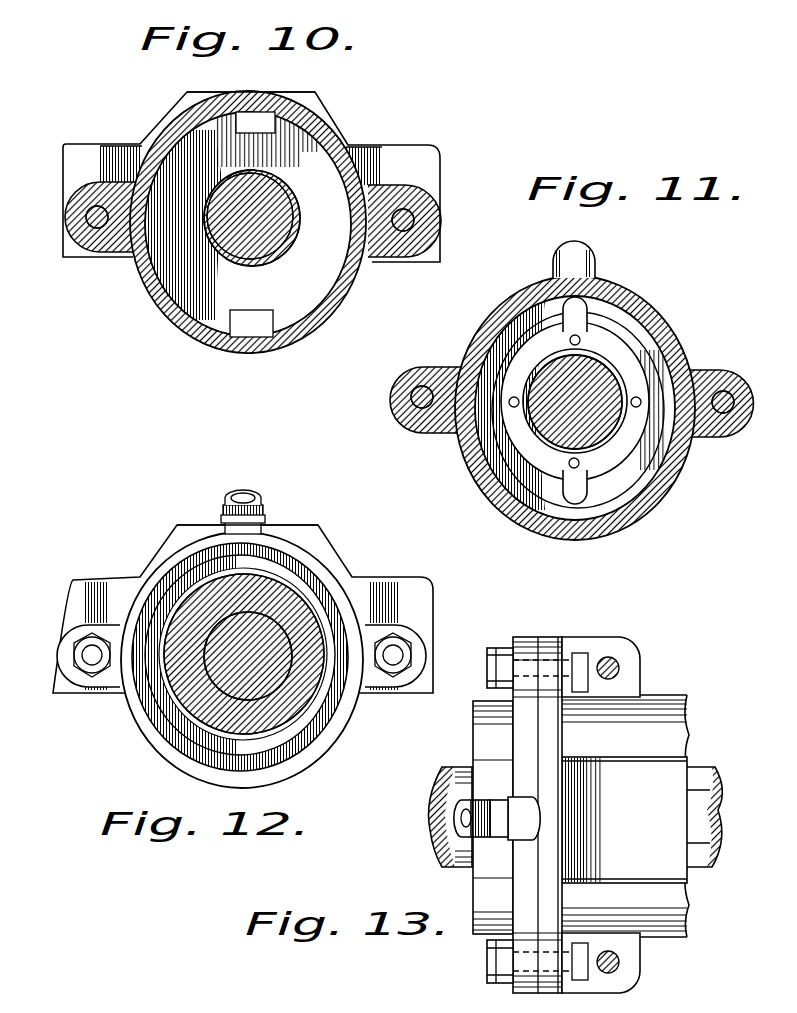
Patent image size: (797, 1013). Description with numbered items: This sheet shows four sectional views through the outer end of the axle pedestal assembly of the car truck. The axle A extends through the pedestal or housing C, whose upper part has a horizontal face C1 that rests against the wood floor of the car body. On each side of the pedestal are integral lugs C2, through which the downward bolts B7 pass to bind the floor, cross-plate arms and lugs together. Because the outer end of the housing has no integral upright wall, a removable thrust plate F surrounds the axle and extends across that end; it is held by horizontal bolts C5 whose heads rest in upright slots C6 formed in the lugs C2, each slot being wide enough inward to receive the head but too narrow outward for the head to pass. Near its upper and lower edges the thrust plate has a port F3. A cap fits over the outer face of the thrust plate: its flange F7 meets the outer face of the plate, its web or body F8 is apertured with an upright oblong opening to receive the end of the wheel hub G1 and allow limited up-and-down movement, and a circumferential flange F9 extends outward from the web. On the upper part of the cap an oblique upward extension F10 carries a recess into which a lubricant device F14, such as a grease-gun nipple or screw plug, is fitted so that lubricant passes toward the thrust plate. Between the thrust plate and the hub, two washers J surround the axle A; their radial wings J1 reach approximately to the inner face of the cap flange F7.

In FIG. 10, the axle A is at (274, 246).
In FIG. 11, the axle A is at (600, 416).
In FIG. 12, the axle A is at (262, 620).
In FIG. 13, the axle A is at (700, 819).
In FIG. 10, the pedestal or housing C is at (94, 145).
In FIG. 13, the pedestal or housing C is at (665, 744).
In FIG. 10, the horizontal face C1 is at (312, 93).
In FIG. 12, the horizontal face C1 is at (195, 527).
In FIG. 13, the horizontal face C1 is at (624, 820).
In FIG. 10, the lugs C2 is at (420, 175).
In FIG. 12, the lugs C2 is at (72, 613).
In FIG. 13, the lugs C2 is at (610, 641).
In FIG. 10, the horizontal bolts C5 is at (441, 206).
In FIG. 11, the horizontal bolts C5 is at (380, 440).
In FIG. 12, the horizontal bolts C5 is at (396, 651).
In FIG. 13, the horizontal bolts C5 is at (487, 669).
In FIG. 12, the upright slot C6 is at (93, 581).
In FIG. 13, the upright slot C6 is at (580, 655).
In FIG. 10, the thrust plate F is at (152, 293).
In FIG. 10, the port F3 is at (260, 113).
In FIG. 10, the flange of the cap F7 is at (344, 148).
In FIG. 11, the flange of the cap F7 is at (478, 479).
In FIG. 12, the web or body of the cap F8 is at (198, 739).
In FIG. 12, the circumferential flange F9 is at (336, 753).
In FIG. 13, the circumferential flange F9 is at (475, 887).
In FIG. 11, the oblique upward extension F10 is at (560, 263).
In FIG. 12, the oblique upward extension F10 is at (261, 498).
In FIG. 13, the oblique upward extension F10 is at (525, 819).
In FIG. 12, the lubricant device F14 is at (268, 525).
In FIG. 13, the lubricant device F14 is at (465, 816).
In FIG. 12, the hub G1 is at (200, 696).
In FIG. 11, the washers J is at (545, 350).
In FIG. 11, the radial wings J1 is at (598, 306).
In FIG. 13, the bolts B7 is at (620, 669).